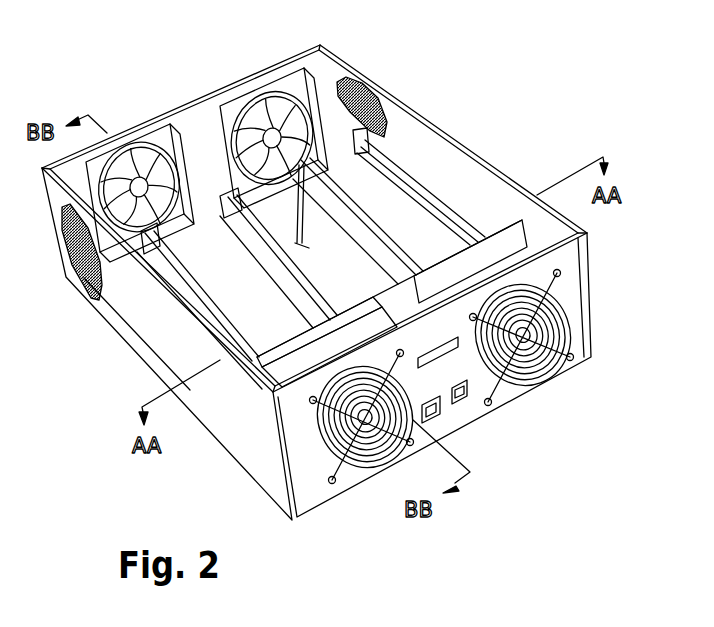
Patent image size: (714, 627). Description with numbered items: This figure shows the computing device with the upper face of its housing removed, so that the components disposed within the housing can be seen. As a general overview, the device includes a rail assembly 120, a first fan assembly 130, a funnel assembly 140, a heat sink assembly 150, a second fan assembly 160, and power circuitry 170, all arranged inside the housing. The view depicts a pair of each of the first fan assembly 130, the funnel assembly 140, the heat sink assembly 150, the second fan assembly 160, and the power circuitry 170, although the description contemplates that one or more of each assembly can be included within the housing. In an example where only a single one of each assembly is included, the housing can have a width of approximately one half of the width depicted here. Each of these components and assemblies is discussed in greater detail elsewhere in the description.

The rail assembly 120 is at (440, 258).
The first fan assembly 130 is at (553, 367).
The funnel assembly 140 is at (563, 222).
The heat sink assembly 150 is at (433, 200).
The second fan assembly 160 is at (339, 101).
The power circuitry 170 is at (427, 172).